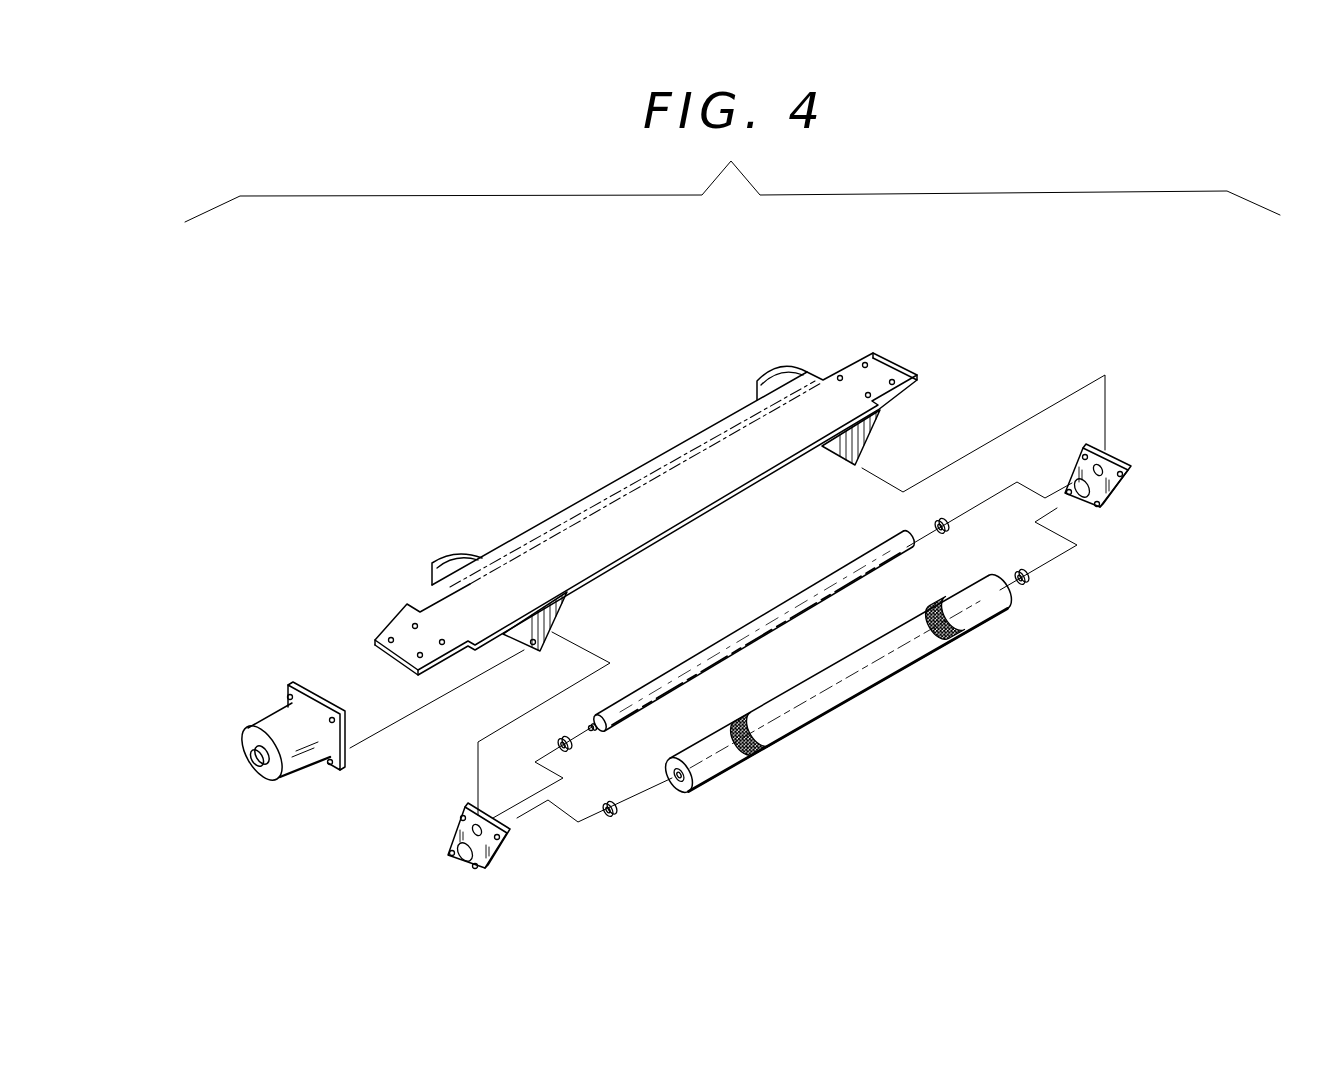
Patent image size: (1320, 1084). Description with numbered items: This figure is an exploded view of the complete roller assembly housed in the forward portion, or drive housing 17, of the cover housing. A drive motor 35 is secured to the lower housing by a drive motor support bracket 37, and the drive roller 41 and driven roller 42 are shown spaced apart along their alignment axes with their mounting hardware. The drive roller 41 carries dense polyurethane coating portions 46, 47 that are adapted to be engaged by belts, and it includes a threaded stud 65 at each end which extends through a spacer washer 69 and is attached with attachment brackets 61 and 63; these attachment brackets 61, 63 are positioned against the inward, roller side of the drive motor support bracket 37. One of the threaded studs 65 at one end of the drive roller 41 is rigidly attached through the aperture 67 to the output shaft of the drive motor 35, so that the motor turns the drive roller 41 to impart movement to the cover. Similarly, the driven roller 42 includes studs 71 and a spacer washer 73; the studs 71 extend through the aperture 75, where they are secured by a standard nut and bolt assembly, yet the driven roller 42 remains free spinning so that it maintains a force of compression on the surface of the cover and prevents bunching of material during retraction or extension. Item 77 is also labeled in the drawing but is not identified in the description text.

The drive housing 17 is at (638, 455).
The drive motor 35 is at (282, 677).
The drive motor support bracket 37 is at (441, 566).
The drive roller 41 is at (869, 707).
The driven roller 42 is at (752, 653).
The polyurethane coating portion 46 is at (777, 737).
The polyurethane coating portion 47 is at (963, 627).
The attachment bracket 61 is at (453, 869).
The attachment bracket 63 is at (1146, 473).
The threaded stud 65 is at (678, 773).
The aperture 67 is at (459, 857).
The spacer washer 69 is at (620, 830).
The stud 71 is at (594, 731).
The spacer washer 73 is at (548, 734).
The aperture 75 is at (464, 806).
The mounting hole 77 is at (1122, 471).